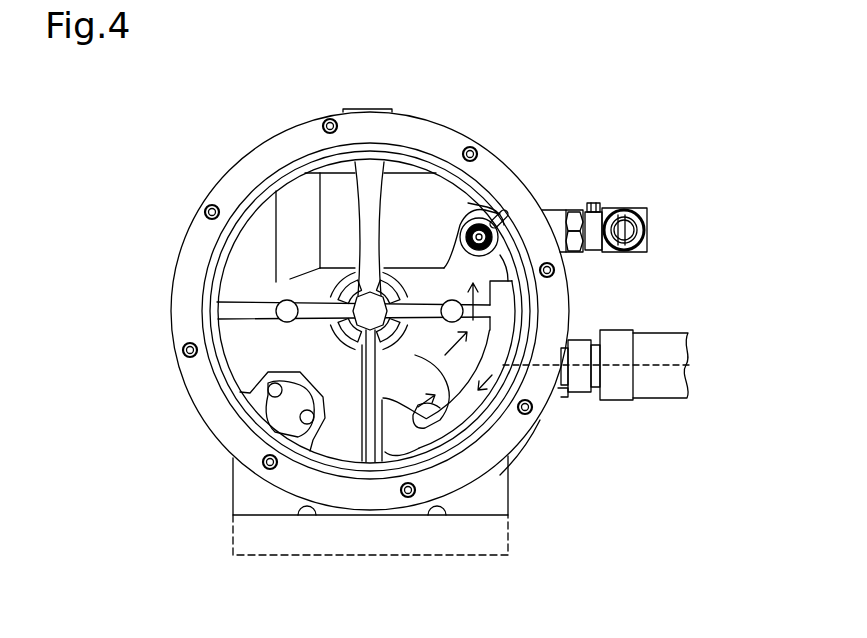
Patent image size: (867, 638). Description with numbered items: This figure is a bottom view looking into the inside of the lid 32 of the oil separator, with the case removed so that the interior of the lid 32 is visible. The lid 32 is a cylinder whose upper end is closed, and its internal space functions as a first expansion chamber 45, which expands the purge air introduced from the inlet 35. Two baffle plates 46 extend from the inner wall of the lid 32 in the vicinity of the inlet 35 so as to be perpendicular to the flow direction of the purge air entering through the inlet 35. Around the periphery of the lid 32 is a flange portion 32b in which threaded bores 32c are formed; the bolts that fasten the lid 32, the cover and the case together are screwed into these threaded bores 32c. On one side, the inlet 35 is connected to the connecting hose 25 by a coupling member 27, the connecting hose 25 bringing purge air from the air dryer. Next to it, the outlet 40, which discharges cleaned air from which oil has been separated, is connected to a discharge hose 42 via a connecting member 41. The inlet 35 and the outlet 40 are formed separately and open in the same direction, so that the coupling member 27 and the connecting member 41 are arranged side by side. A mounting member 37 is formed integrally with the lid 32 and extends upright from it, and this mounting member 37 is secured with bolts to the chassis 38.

The connecting hose 25 is at (677, 332).
The coupling member 27 is at (581, 340).
The lid 32 is at (395, 112).
The flange portion 32b is at (517, 447).
The threaded bores 32c is at (328, 119).
The inlet 35 is at (570, 393).
The mounting member 37 is at (509, 499).
The chassis 38 is at (478, 562).
The outlet 40 is at (560, 209).
The connecting member 41 is at (642, 207).
The discharge hose 42 is at (649, 231).
The first expansion chamber 45 is at (306, 361).
The baffle plates 46 is at (488, 305).